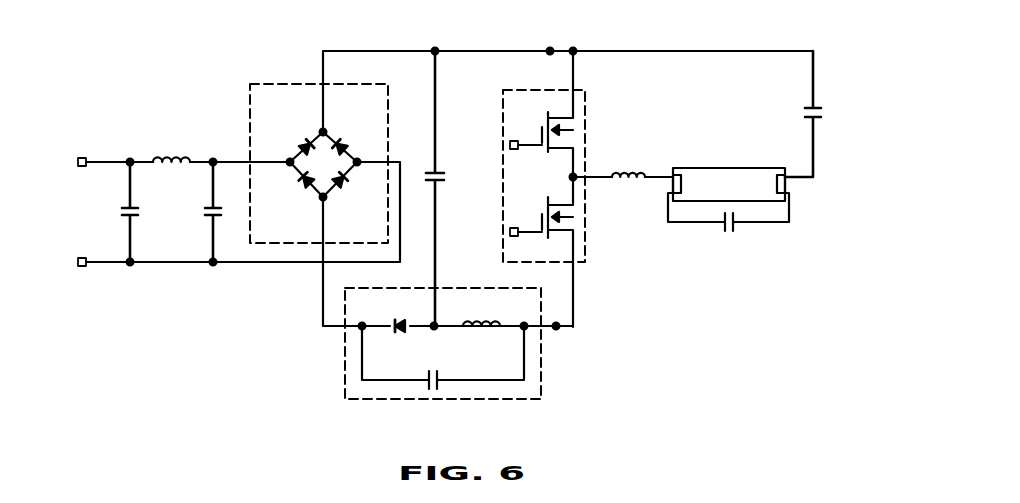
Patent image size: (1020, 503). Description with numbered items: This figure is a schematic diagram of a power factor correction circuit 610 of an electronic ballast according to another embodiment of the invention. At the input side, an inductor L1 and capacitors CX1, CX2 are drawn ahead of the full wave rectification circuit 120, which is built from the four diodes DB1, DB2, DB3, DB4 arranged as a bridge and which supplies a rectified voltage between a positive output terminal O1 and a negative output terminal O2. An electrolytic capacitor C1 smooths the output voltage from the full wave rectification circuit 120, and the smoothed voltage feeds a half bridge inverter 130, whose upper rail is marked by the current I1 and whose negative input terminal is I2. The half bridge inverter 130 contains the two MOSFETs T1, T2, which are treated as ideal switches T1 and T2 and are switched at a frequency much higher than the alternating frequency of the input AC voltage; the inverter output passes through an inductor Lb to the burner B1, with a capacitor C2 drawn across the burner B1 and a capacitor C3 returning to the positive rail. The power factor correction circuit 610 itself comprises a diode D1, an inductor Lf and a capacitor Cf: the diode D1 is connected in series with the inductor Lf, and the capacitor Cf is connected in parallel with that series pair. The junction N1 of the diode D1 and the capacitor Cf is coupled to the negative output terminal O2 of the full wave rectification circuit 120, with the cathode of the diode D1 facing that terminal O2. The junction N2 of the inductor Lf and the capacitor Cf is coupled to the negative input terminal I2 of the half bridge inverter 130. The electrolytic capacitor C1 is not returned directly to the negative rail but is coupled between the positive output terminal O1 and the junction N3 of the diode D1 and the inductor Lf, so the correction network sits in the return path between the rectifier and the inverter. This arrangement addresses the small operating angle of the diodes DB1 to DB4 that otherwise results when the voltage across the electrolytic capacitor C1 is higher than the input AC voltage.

The full wave rectification circuit 120 is at (288, 164).
The half bridge inverter 130 is at (576, 189).
The power factor correction circuit 610 is at (423, 347).
The input inductor L1 is at (171, 148).
The input filter capacitor CX1 is at (145, 212).
The input filter capacitor CX2 is at (197, 212).
The diode DB1 is at (355, 137).
The diode DB2 is at (291, 189).
The diode DB3 is at (355, 189).
The diode DB4 is at (291, 137).
The positive output terminal O1 is at (321, 130).
The negative output terminal O2 is at (321, 199).
The electrolytic capacitor C1 is at (442, 189).
The bus current I1 is at (550, 51).
The negative input terminal I2 is at (558, 329).
The MOSFET T1 is at (541, 126).
The MOSFET T2 is at (541, 213).
The ballast inductor Lb is at (628, 161).
The burner B1 is at (729, 184).
The resonant capacitor C2 is at (728, 223).
The coupling capacitor C3 is at (816, 114).
The diode D1 is at (398, 315).
The inductor Lf is at (481, 311).
The capacitor Cf is at (443, 357).
The junction N1 is at (347, 330).
The junction N2 is at (526, 329).
The junction N3 is at (436, 329).